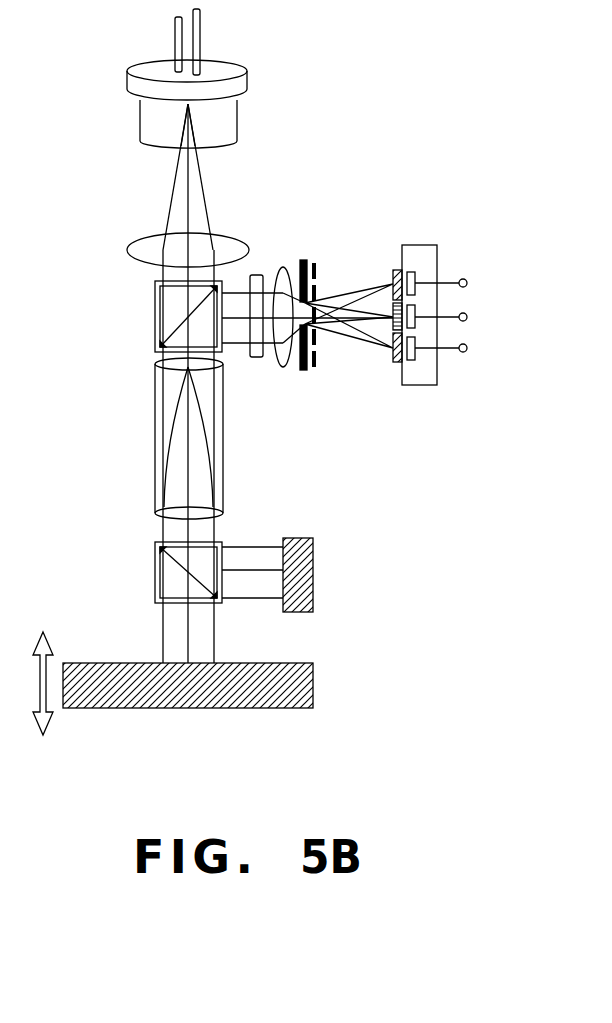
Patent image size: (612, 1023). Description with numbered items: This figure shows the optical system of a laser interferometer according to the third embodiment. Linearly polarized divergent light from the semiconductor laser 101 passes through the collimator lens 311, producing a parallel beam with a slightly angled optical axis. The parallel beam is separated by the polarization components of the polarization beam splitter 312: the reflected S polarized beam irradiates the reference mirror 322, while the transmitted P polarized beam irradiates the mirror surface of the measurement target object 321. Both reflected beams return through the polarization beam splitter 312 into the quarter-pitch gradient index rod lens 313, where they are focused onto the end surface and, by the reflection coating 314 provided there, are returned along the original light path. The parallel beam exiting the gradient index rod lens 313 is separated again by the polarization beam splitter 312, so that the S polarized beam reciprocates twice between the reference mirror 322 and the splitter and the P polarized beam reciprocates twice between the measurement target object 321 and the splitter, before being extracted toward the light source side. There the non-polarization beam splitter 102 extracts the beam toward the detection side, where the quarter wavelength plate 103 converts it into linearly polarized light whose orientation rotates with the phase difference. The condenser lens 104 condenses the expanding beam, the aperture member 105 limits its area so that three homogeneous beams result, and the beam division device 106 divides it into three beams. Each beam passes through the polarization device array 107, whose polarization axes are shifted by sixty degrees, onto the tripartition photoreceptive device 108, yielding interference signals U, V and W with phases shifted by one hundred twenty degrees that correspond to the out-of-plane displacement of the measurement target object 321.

The semiconductor laser 101 is at (237, 122).
The collimator lens 311 is at (162, 238).
The non-polarization beam splitter 102 is at (154, 305).
The quarter wavelength plate 103 is at (257, 358).
The condenser lens 104 is at (283, 267).
The aperture member 105 is at (303, 259).
The beam division device 106 is at (315, 262).
The polarization device array 107 is at (397, 271).
The tripartition photoreceptive device 108 is at (415, 270).
The reflection coating 314 is at (176, 367).
The gradient index rod lens 313 is at (155, 441).
The polarization beam splitter 312 is at (155, 568).
The reference mirror 322 is at (315, 570).
The measurement target object 321 is at (268, 710).